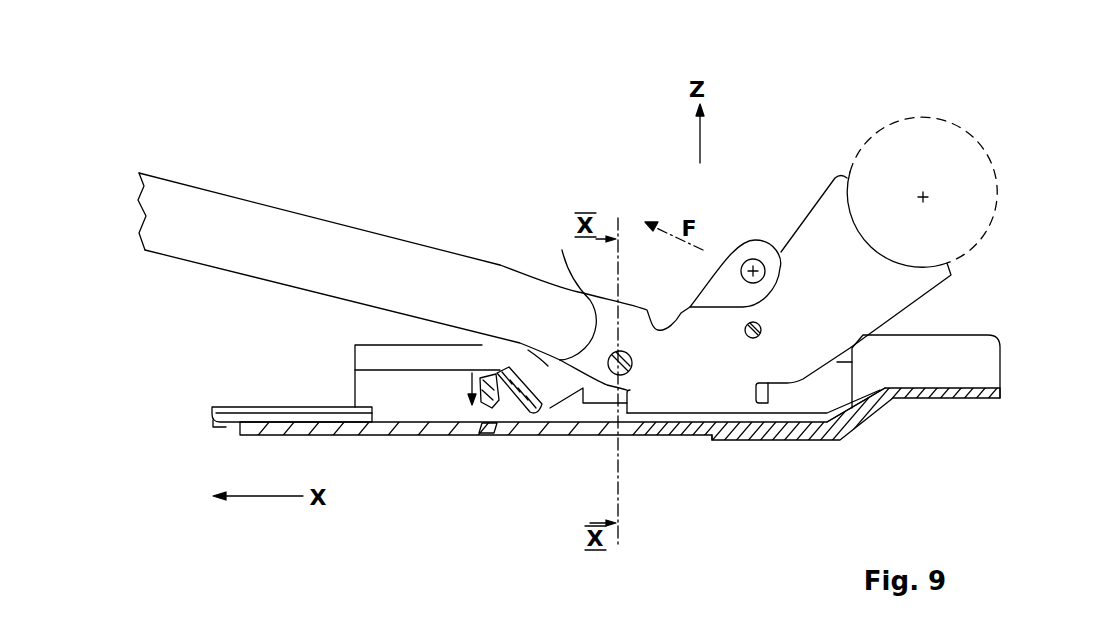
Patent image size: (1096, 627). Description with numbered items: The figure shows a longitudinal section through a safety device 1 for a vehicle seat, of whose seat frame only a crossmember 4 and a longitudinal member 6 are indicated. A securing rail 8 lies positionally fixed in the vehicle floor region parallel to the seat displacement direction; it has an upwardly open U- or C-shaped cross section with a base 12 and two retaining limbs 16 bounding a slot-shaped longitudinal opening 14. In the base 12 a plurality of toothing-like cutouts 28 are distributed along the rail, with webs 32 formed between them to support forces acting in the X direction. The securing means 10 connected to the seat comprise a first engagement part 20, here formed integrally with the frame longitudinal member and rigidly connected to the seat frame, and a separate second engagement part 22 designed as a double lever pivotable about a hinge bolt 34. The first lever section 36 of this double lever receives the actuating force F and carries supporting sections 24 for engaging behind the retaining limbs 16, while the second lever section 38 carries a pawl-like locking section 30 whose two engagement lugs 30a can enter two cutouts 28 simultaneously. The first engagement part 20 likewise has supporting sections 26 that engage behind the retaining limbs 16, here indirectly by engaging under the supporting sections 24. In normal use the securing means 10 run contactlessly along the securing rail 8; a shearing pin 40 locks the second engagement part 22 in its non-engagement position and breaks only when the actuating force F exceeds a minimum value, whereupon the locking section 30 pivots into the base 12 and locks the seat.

The safety device 1 is at (536, 250).
The crossmember 4 is at (921, 150).
The longitudinal member 6 is at (306, 238).
The securing rail 8 is at (693, 446).
The securing means 10 is at (863, 407).
The base 12 is at (677, 436).
The longitudinal opening 14 is at (380, 352).
The retaining limbs 16 is at (352, 383).
The first engagement part 20 is at (797, 437).
The second engagement part 22 is at (556, 382).
The supporting sections 24 is at (847, 407).
The supporting sections 26 is at (733, 397).
The cutouts 28 is at (487, 437).
The locking section 30 is at (499, 376).
The engagement lugs 30a is at (548, 366).
The webs 32 is at (412, 440).
The hinge bolt 34 is at (633, 362).
The first lever section 36 is at (757, 250).
The second lever section 38 is at (562, 248).
The shearing pin 40 is at (764, 328).